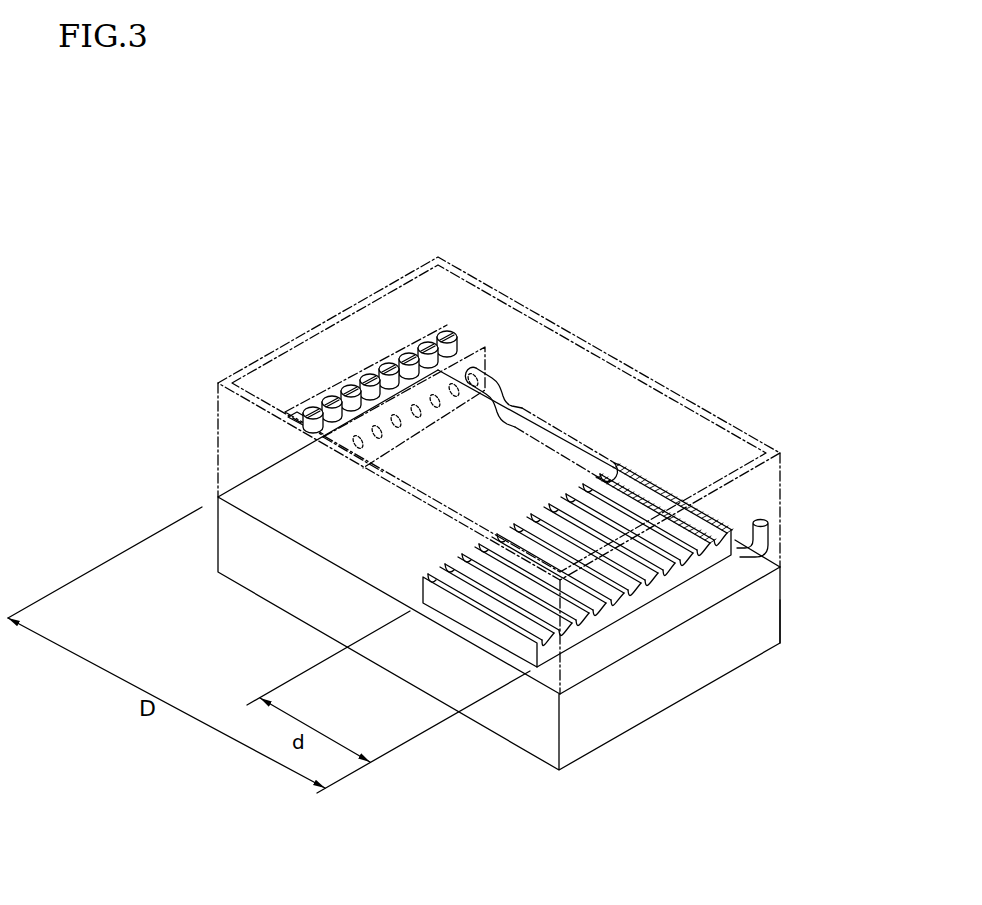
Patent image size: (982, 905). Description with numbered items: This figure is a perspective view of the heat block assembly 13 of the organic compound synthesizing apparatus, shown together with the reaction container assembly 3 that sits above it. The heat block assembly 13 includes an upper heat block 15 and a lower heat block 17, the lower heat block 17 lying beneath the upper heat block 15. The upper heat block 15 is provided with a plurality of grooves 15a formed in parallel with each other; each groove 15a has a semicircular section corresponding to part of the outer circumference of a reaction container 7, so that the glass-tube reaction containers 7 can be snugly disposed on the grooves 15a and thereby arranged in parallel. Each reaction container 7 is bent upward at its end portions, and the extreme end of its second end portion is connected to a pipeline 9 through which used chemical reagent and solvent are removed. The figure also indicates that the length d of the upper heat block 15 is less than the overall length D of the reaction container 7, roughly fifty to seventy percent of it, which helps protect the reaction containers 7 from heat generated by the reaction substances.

The reaction container assembly 3 is at (530, 308).
The reaction container 7 is at (543, 425).
The pipeline 9 is at (360, 373).
The heat block assembly 13 is at (841, 591).
The upper heat block 15 is at (764, 582).
The groove 15a is at (702, 550).
The lower heat block 17 is at (765, 622).